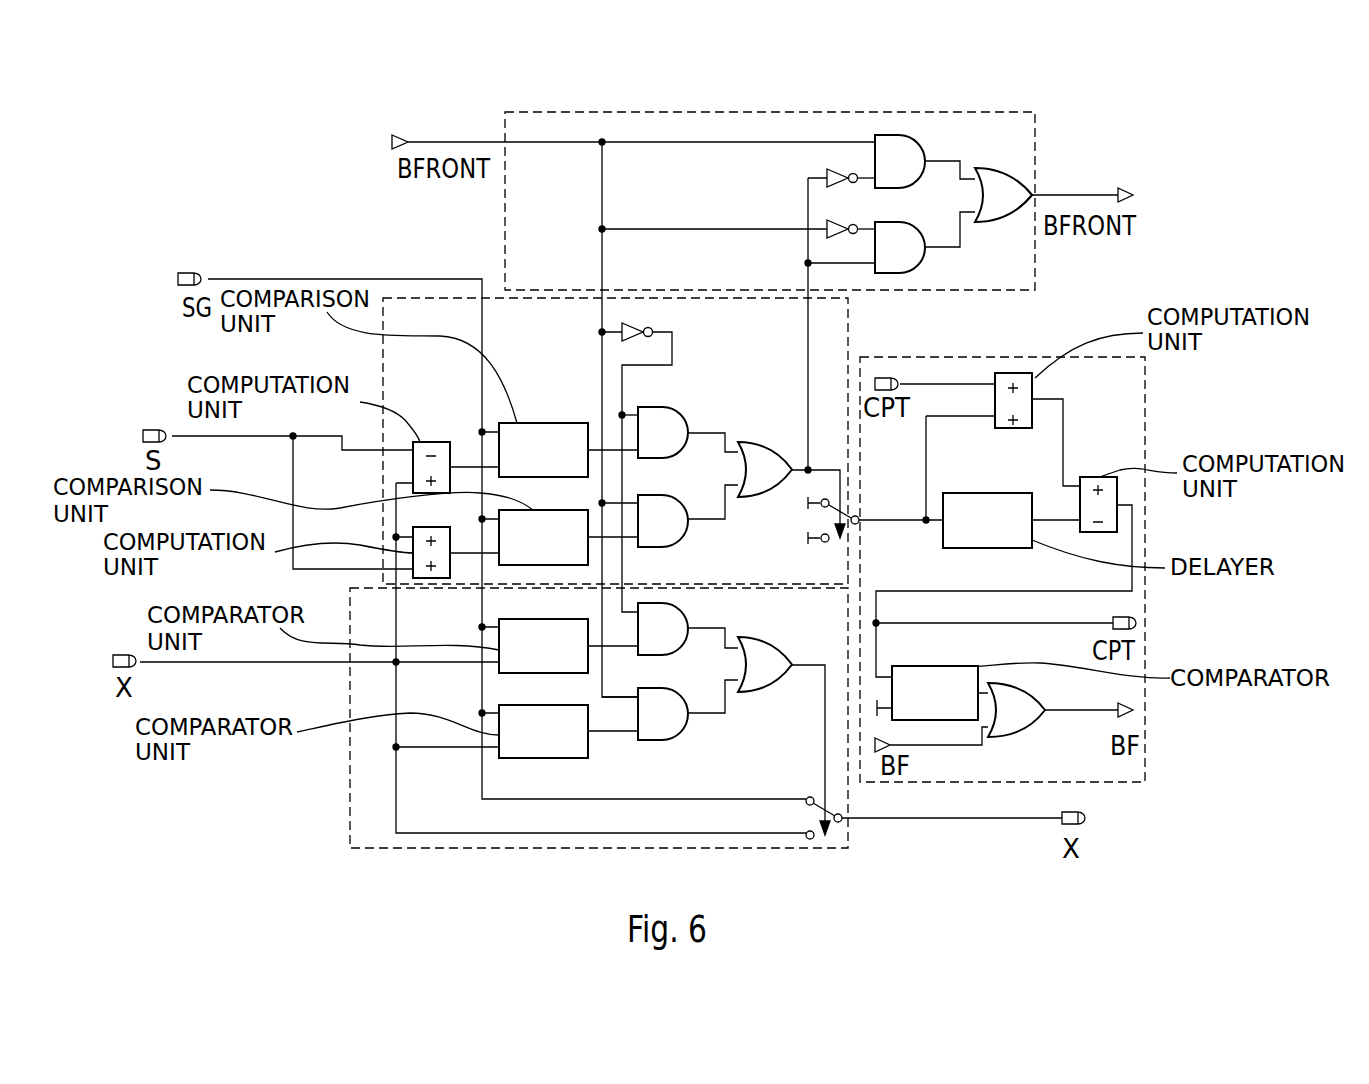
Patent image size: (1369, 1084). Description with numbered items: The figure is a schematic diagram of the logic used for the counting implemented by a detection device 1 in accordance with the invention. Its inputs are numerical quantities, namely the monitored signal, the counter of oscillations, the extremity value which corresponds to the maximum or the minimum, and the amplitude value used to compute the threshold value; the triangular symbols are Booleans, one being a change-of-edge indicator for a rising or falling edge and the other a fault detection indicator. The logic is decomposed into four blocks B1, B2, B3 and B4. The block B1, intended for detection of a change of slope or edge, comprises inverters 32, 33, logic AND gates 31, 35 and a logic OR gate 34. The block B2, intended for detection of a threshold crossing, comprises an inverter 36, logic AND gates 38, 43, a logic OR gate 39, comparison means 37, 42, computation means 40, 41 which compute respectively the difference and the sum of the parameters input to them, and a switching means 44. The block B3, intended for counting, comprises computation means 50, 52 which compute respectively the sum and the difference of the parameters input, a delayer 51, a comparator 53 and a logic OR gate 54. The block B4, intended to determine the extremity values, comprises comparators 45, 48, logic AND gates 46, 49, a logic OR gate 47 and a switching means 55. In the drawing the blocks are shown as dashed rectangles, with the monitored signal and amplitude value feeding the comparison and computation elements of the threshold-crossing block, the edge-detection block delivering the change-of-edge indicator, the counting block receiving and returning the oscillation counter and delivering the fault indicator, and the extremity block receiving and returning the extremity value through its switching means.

The signal processing circuit 1 is at (327, 777).
The logic AND gate 31 is at (925, 144).
The inverter 32 is at (835, 172).
The inverter 33 is at (840, 224).
The logic OR gate 34 is at (1012, 218).
The logic AND gate 35 is at (900, 272).
The inverter 36 is at (636, 326).
The comparison means 37 is at (532, 423).
The logic AND gate 38 is at (660, 407).
The logic OR gate 39 is at (790, 445).
The computation means 40 is at (430, 442).
The computation means 41 is at (432, 585).
The comparison means 42 is at (533, 510).
The logic AND gate 43 is at (670, 548).
The switching means 44 is at (828, 490).
The comparator 45 is at (530, 619).
The logic AND gate 46 is at (690, 612).
The logic OR gate 47 is at (780, 685).
The comparator 48 is at (530, 758).
The logic AND gate 49 is at (645, 742).
The computation means 50 is at (1033, 380).
The delayer 51 is at (980, 493).
The computation means 52 is at (1098, 477).
The comparator 53 is at (935, 666).
The logic OR gate 54 is at (1025, 690).
The switching means 55 is at (808, 790).
The block B1 is at (1037, 262).
The block B2 is at (850, 318).
The block B3 is at (1147, 427).
The block B4 is at (820, 850).